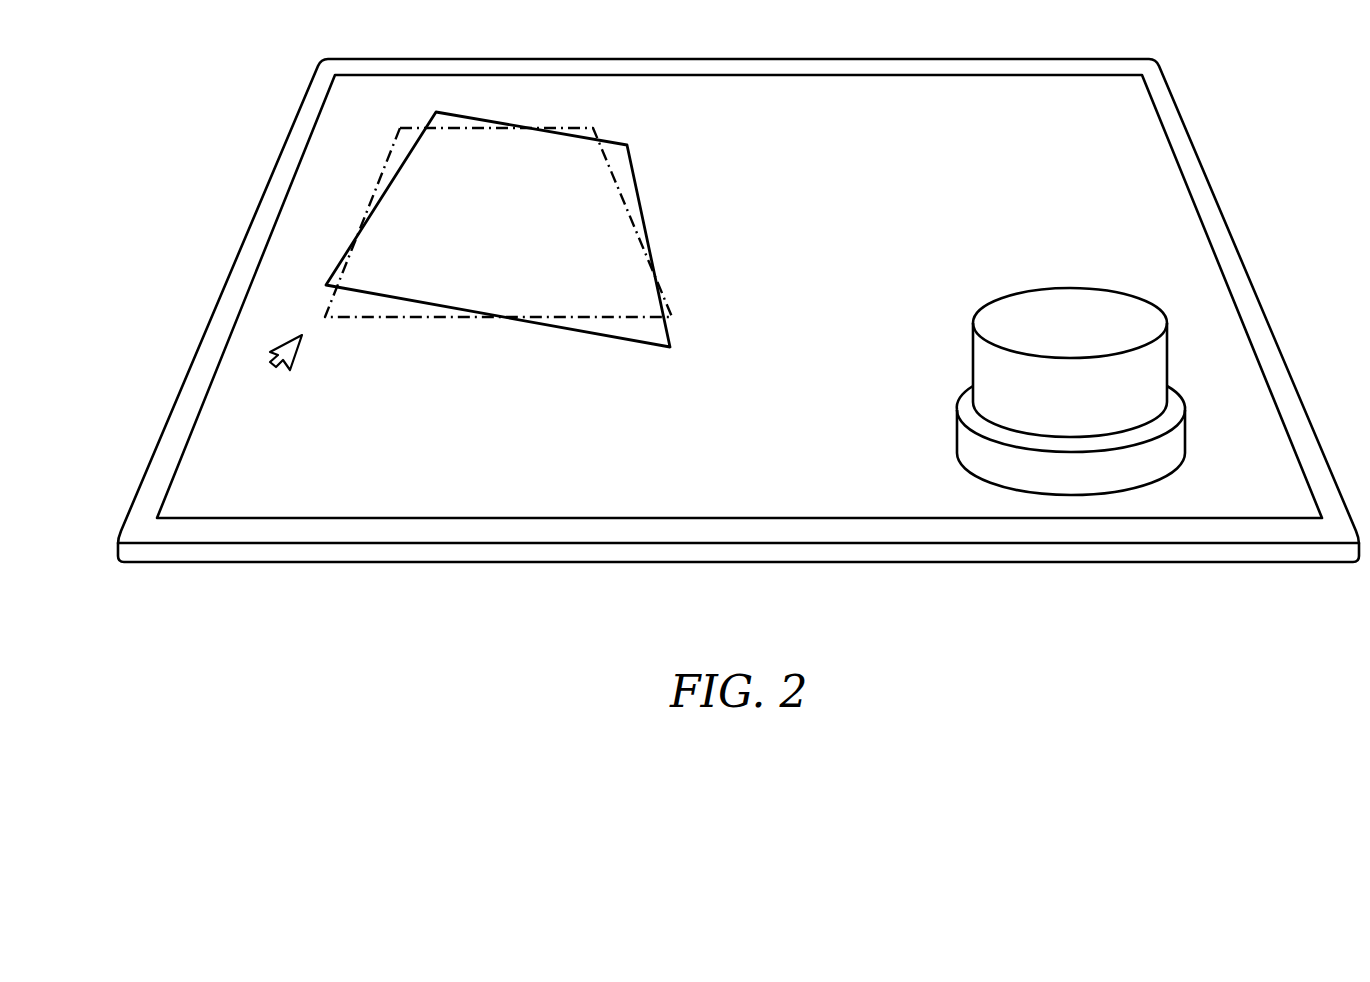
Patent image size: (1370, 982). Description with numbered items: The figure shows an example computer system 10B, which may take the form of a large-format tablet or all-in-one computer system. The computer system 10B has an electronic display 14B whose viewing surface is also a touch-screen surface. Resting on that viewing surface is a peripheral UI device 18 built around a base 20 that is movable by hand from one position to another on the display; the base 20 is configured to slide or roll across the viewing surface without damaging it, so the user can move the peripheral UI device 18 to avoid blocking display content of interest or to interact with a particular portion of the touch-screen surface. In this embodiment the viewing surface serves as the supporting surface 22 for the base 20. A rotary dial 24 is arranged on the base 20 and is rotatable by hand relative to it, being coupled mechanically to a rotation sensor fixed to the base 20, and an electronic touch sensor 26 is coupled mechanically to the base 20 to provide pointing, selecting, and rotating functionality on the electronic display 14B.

The computer system 10B is at (173, 73).
The electronic display 14B is at (755, 305).
The peripheral UI device 18 is at (957, 253).
The base 20 is at (1155, 473).
The supporting surface 22 is at (937, 490).
The rotary dial 24 is at (1070, 362).
The electronic touch sensor 26 is at (1078, 335).